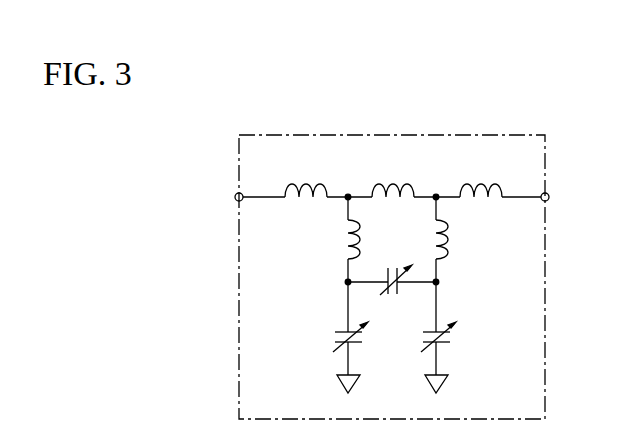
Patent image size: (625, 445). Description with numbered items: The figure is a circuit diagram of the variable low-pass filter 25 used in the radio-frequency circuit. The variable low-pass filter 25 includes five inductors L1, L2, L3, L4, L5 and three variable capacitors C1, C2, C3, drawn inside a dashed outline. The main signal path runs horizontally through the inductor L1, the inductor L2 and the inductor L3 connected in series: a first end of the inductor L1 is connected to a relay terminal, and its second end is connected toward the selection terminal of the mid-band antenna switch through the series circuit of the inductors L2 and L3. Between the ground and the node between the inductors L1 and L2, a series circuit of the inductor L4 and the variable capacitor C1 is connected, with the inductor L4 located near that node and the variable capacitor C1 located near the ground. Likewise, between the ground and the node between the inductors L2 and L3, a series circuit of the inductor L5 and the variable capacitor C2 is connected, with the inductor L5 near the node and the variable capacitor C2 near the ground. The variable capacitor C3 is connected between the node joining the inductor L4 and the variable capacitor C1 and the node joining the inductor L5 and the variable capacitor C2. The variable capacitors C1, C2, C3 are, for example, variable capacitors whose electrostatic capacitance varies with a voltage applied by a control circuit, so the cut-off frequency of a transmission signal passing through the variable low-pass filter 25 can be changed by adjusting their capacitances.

The variable low-pass filter 25 is at (468, 135).
The inductor L1 is at (306, 174).
The inductor L2 is at (393, 174).
The inductor L3 is at (481, 174).
The inductor L4 is at (368, 239).
The inductor L5 is at (456, 239).
The variable capacitor C1 is at (335, 337).
The variable capacitor C2 is at (449, 337).
The variable capacitor C3 is at (392, 296).